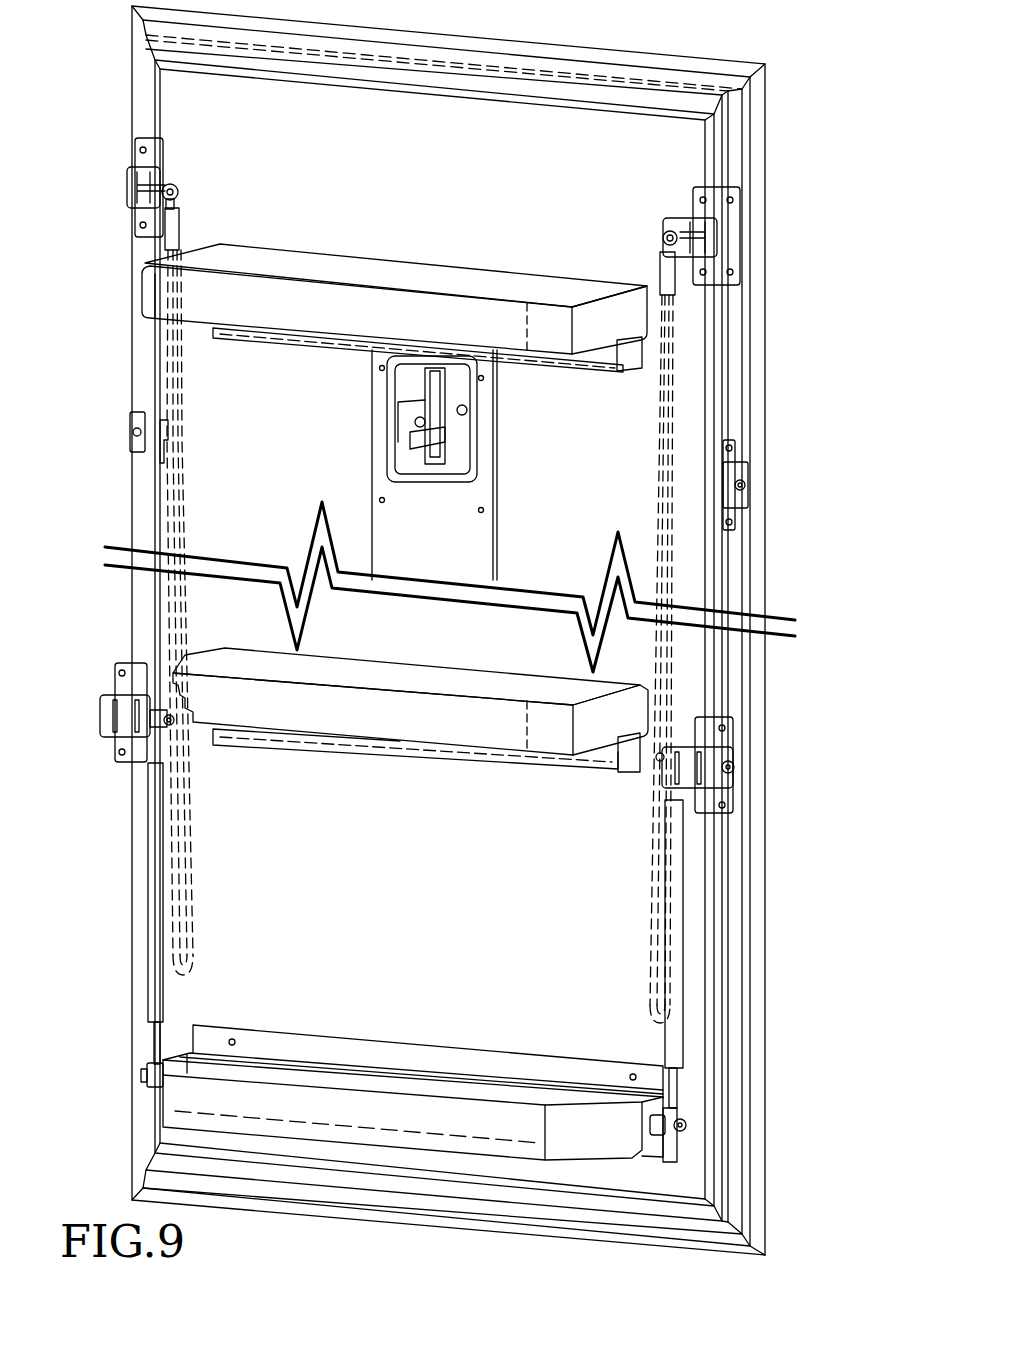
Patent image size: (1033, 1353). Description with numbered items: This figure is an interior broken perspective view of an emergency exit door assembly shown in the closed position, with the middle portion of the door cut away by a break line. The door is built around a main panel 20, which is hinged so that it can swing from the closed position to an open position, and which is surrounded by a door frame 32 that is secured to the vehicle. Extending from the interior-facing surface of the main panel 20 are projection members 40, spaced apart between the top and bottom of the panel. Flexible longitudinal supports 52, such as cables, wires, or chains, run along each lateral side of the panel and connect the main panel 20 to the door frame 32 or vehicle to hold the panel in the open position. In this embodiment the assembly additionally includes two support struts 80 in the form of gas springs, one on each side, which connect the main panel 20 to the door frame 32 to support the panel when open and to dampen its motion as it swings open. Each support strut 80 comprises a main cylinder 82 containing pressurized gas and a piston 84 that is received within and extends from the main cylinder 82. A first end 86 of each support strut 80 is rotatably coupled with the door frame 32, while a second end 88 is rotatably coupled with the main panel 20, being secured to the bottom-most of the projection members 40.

The main panel 20 is at (460, 884).
The door frame 32 is at (767, 1050).
The projection member 40 is at (348, 1103).
The longitudinal support 52 is at (200, 936).
The support strut 80 is at (449, 939).
The main cylinder 82 is at (155, 878).
The piston 84 is at (155, 1040).
The first end 86 is at (172, 724).
The second end 88 is at (143, 1078).